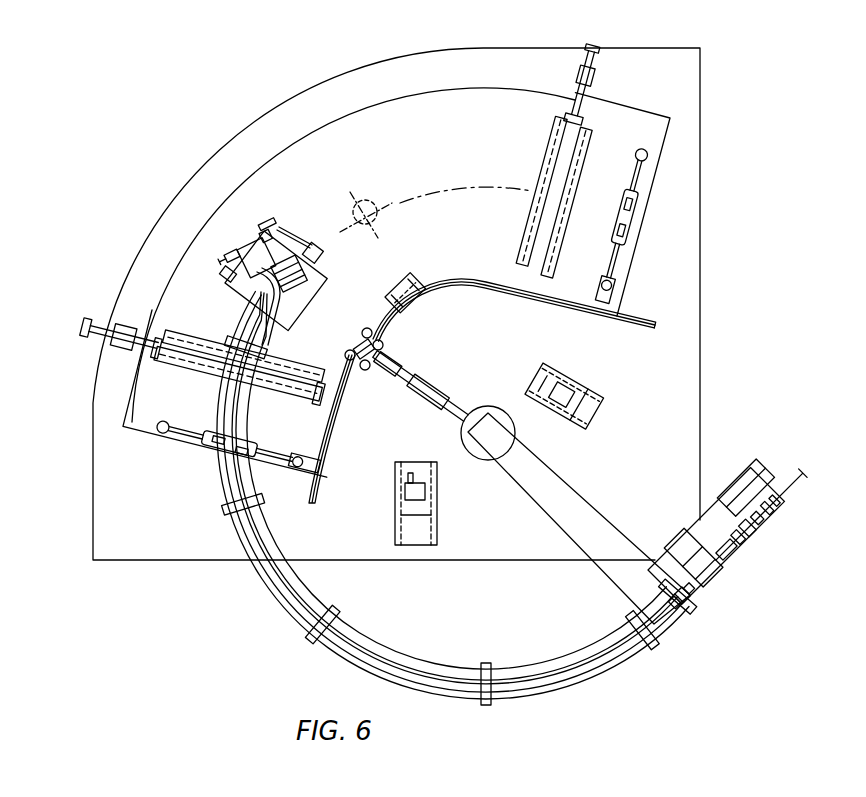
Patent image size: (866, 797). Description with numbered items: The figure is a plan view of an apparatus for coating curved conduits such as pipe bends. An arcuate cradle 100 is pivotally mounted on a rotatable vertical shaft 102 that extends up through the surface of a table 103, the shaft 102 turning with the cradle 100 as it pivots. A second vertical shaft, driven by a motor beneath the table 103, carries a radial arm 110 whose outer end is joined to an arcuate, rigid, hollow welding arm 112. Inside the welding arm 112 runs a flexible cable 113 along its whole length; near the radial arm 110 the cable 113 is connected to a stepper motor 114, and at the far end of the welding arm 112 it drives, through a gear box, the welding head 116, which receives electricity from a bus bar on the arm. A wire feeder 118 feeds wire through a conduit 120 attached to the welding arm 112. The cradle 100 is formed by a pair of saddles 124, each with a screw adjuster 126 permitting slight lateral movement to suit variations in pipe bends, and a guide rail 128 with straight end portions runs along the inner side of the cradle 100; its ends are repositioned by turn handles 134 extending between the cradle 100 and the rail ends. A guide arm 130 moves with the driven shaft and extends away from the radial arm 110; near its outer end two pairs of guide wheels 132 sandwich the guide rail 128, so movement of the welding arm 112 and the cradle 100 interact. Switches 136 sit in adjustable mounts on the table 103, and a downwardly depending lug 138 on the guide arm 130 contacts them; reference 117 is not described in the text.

The arcuate cradle 100 is at (300, 156).
The rotatable vertical shaft 102 is at (368, 208).
The table 103 is at (192, 206).
The radial arm 110 is at (576, 506).
The welding arm 112 is at (290, 598).
The flexible cable 113 is at (682, 596).
The stepper motor 114 is at (717, 573).
The welding head 116 is at (303, 313).
The guide track 117 is at (264, 585).
The wire feeder 118 is at (756, 520).
The conduit 120 is at (385, 660).
The saddles 124 is at (562, 162).
The screw adjuster 126 is at (600, 50).
The guide rail 128 is at (327, 458).
The guide arm 130 is at (456, 413).
The guide wheels 132 is at (382, 348).
The turn handles 134 is at (641, 214).
The switches 136 is at (428, 496).
The lug 138 is at (421, 395).